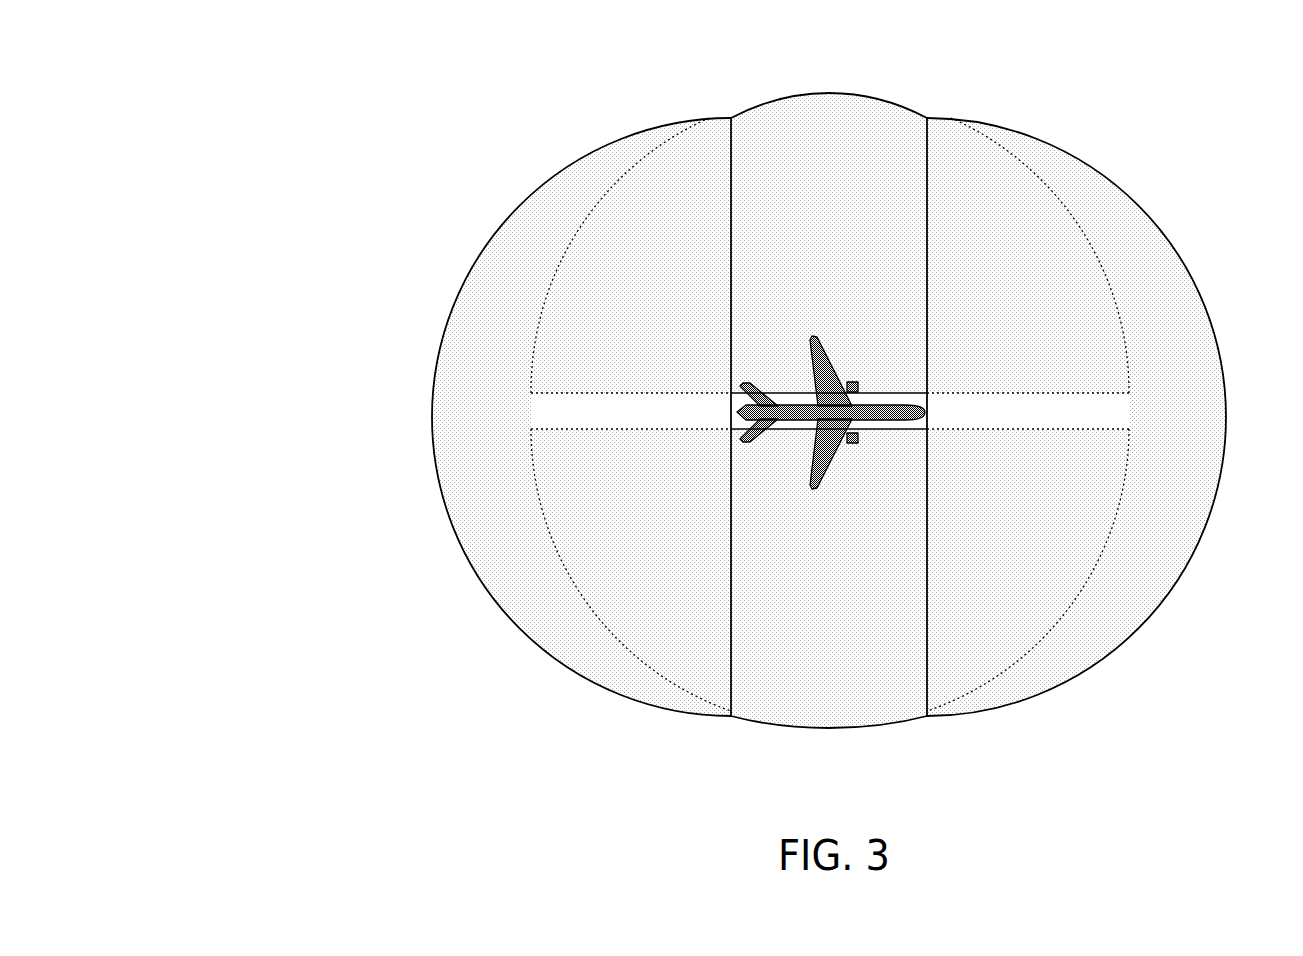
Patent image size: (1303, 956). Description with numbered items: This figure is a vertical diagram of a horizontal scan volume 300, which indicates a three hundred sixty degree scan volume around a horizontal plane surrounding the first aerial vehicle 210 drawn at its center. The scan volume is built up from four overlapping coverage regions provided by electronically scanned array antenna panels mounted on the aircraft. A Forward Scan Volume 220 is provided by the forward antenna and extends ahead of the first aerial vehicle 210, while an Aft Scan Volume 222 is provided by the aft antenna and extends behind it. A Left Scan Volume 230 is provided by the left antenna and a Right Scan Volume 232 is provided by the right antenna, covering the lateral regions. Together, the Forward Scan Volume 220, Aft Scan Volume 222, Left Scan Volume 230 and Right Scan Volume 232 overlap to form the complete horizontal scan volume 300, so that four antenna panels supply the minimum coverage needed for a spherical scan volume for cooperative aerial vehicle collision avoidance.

The horizontal scan volume 300 is at (160, 109).
The first aerial vehicle 210 is at (810, 335).
The Forward Scan Volume 220 is at (1227, 392).
The Aft Scan Volume 222 is at (432, 390).
The Left Scan Volume 230 is at (808, 93).
The Right Scan Volume 232 is at (822, 730).